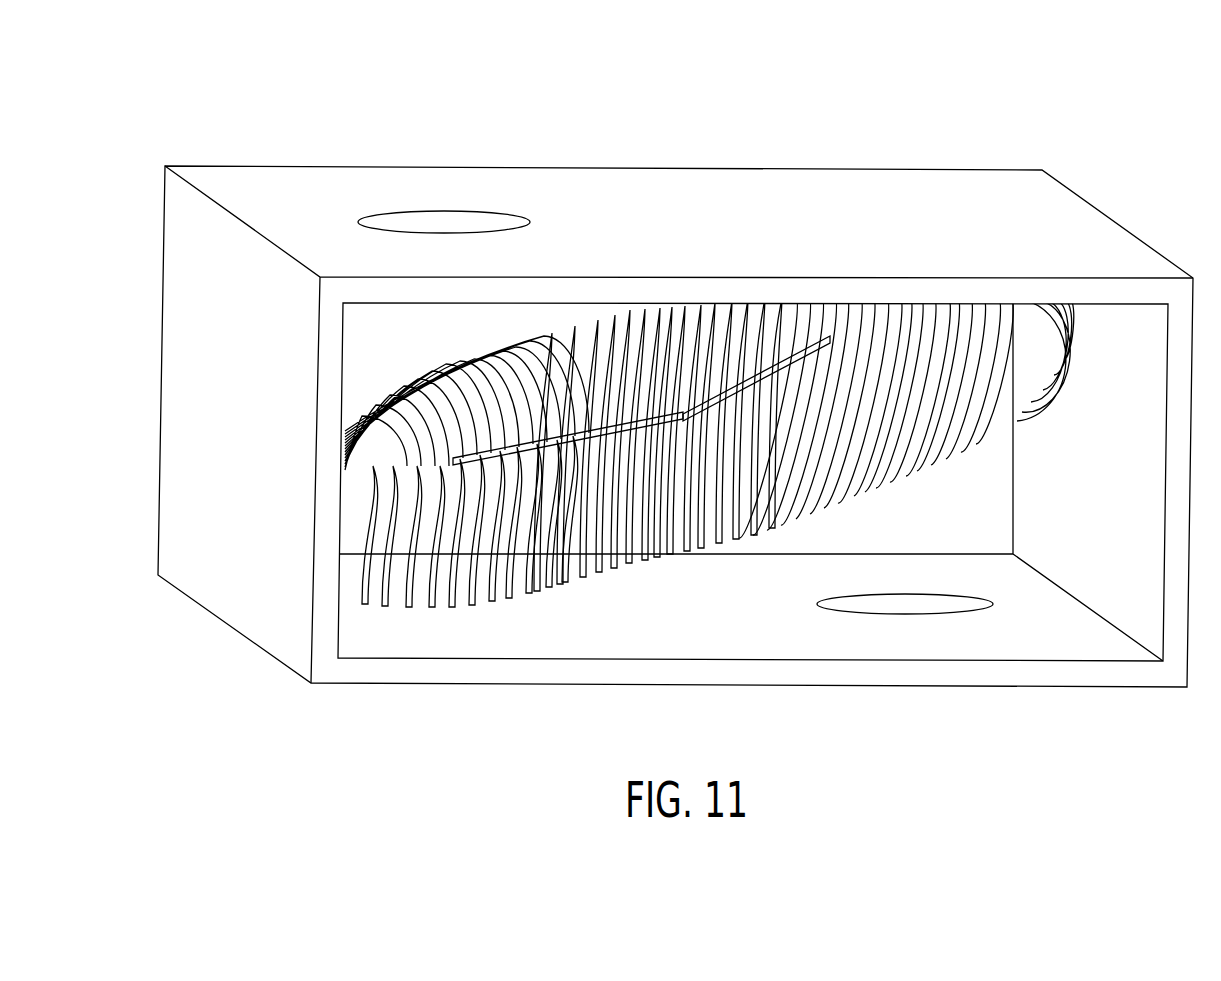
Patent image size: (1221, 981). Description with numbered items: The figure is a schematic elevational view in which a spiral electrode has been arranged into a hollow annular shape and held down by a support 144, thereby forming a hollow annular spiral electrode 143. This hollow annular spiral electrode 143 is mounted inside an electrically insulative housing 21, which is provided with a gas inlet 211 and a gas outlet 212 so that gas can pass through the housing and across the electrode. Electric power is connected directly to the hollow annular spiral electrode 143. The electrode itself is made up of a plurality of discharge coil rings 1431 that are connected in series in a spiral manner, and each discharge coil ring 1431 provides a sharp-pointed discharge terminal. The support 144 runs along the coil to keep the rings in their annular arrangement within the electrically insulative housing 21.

The electrically insulative housing 21 is at (978, 203).
The gas inlet 211 is at (905, 604).
The gas outlet 212 is at (436, 220).
The hollow annular spiral electrode 143 is at (709, 417).
The discharge coil ring 1431 is at (897, 357).
The support 144 is at (792, 362).